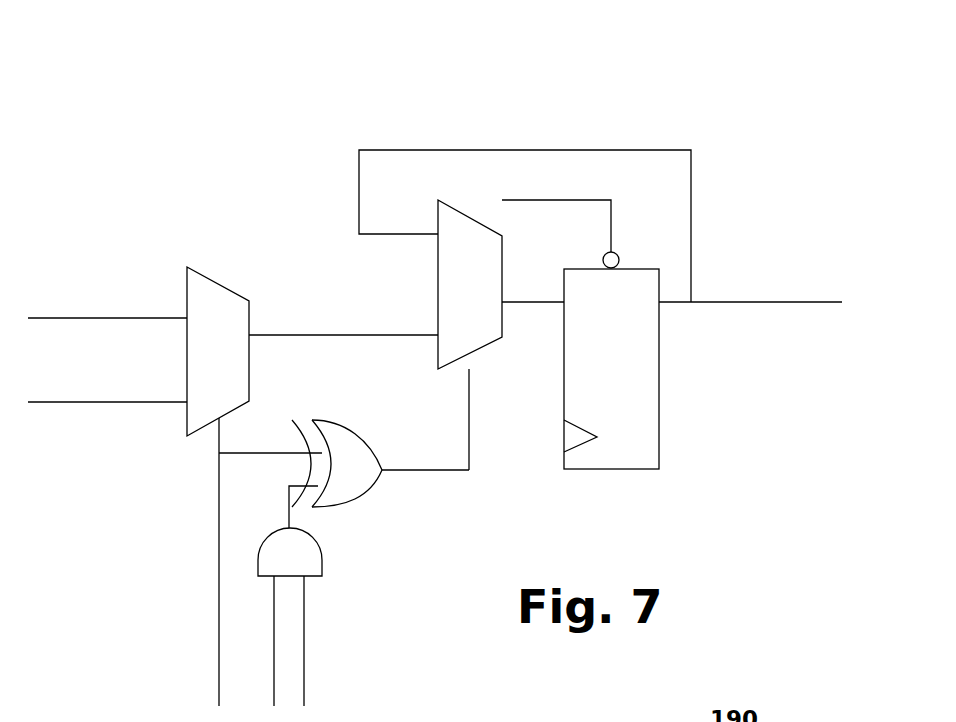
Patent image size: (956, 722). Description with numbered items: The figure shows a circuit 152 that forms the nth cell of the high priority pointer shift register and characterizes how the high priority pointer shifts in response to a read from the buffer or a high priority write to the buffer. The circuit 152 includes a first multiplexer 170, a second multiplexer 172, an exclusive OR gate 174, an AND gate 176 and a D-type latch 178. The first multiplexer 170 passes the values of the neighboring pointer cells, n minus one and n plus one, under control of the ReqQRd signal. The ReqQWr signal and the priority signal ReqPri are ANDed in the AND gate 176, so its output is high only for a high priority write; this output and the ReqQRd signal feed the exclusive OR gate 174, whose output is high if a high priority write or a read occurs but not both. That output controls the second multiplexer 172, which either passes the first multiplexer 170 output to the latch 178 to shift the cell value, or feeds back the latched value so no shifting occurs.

The circuit 152 is at (692, 117).
The first multiplexer 170 is at (215, 279).
The second multiplexer 172 is at (483, 345).
The exclusive OR gate 174 is at (373, 490).
The AND gate 176 is at (322, 550).
The D-type latch 178 is at (659, 420).